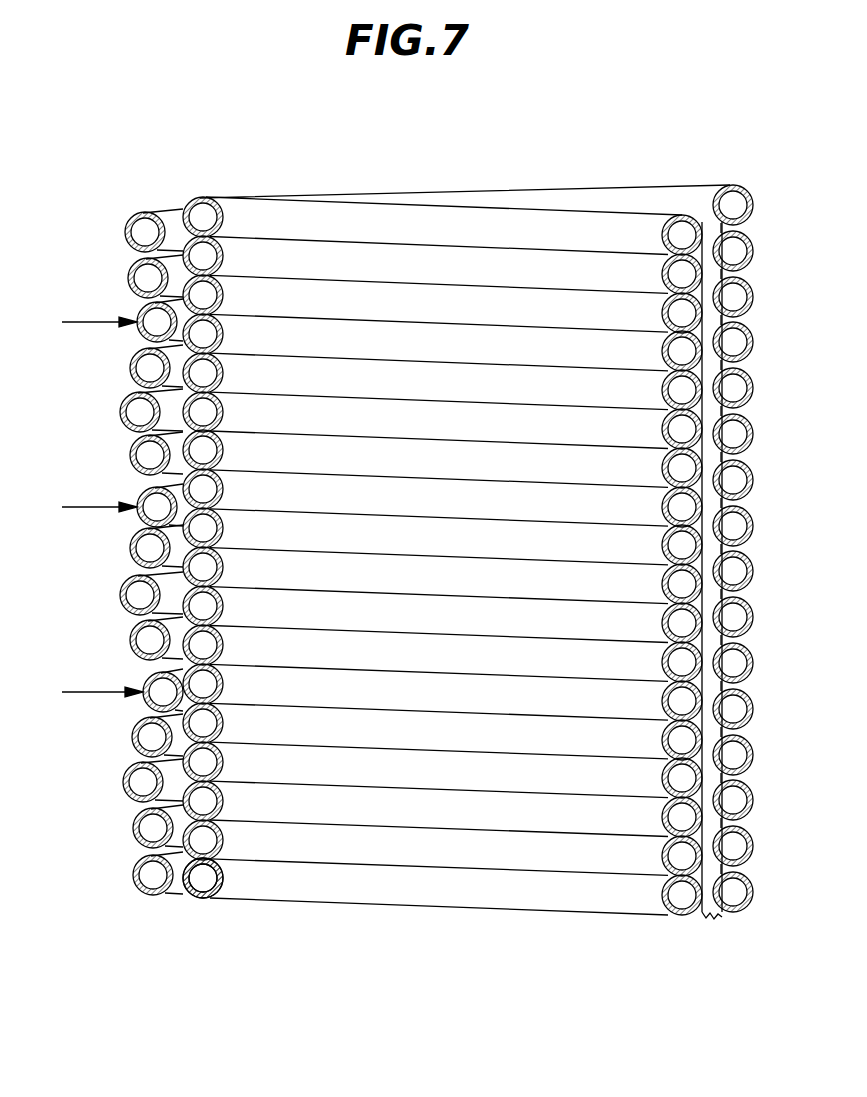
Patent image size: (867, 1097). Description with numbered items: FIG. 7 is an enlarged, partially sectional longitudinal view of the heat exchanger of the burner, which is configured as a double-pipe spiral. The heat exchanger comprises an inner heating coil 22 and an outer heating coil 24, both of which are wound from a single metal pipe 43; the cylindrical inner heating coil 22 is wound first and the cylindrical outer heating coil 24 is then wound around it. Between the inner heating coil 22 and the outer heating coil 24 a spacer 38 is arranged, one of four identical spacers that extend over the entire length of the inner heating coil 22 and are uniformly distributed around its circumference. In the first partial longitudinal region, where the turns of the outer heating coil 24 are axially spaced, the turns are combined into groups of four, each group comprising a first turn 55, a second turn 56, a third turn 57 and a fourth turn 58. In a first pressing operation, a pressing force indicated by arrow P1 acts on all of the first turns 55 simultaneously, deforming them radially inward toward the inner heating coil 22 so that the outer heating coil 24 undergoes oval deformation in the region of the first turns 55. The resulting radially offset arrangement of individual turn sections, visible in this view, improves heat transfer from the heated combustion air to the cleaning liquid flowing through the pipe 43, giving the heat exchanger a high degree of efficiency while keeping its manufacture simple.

The inner heating coil 22 is at (200, 186).
The outer heating coil 24 is at (142, 198).
The first spacer 38 is at (702, 240).
The metal pipe 43 is at (208, 899).
The first turn 55 is at (142, 336).
The second turn 56 is at (136, 355).
The third turn 57 is at (126, 399).
The fourth turn 58 is at (136, 441).
The pressing force P1 is at (75, 322).